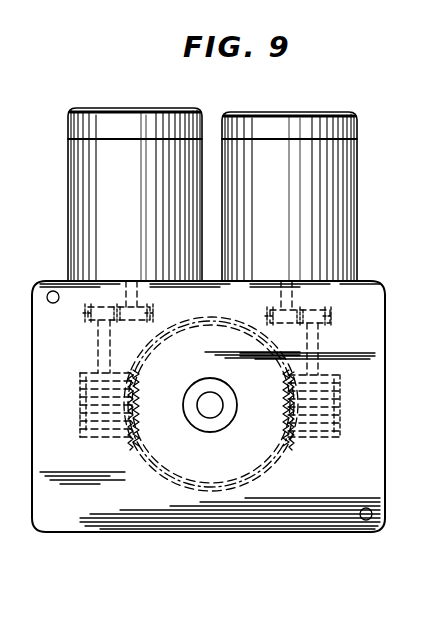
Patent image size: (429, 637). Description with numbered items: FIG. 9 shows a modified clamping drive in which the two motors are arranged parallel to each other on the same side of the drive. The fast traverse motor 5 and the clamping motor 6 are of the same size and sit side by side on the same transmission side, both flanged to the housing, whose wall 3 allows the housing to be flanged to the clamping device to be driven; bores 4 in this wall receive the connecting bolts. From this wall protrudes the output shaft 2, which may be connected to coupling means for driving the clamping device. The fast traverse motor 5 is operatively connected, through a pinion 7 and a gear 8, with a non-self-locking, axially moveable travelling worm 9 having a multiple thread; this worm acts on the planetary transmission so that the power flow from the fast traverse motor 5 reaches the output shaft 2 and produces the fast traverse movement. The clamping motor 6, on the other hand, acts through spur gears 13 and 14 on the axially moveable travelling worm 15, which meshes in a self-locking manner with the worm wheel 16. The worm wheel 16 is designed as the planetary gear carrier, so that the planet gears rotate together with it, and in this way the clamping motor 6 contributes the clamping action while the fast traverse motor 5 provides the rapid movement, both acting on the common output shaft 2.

The output shaft 2 is at (213, 410).
The wall 3 is at (222, 519).
The bores 4 is at (52, 291).
The fast traverse motor 5 is at (347, 184).
The clamping motor 6 is at (78, 182).
The pinion 7 is at (268, 312).
The gear 8 is at (333, 320).
The travelling worm 9 is at (300, 440).
The spur gear 13 is at (155, 312).
The spur gear 14 is at (86, 322).
The travelling worm 15 is at (104, 438).
The worm wheel 16 is at (160, 478).